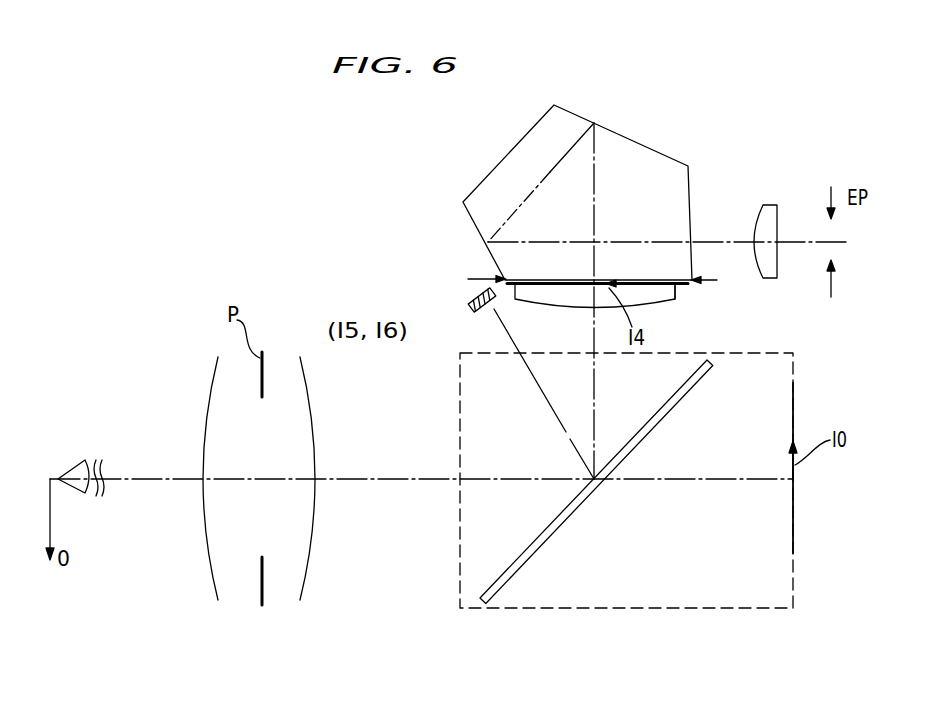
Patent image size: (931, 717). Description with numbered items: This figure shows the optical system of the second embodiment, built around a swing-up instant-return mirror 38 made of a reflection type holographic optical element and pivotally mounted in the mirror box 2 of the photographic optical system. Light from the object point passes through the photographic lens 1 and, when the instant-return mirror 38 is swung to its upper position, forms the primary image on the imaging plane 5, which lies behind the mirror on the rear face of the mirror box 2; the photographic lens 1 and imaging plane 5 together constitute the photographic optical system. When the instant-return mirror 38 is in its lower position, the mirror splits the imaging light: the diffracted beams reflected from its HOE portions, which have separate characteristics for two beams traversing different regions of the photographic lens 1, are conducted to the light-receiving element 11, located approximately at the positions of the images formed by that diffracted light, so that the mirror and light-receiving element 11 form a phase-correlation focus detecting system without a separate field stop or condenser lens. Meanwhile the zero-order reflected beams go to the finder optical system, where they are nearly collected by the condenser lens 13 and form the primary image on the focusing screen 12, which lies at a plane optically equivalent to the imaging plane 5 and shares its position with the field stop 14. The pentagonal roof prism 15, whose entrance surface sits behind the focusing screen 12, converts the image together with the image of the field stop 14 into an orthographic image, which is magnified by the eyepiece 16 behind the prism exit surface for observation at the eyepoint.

The photographic lens 1 is at (233, 593).
The mirror box 2 is at (457, 572).
The imaging plane 5 is at (795, 505).
The light-receiving element 11 is at (473, 292).
The focusing screen 12 is at (516, 291).
The condenser lens 13 is at (667, 300).
The field stop 14 is at (477, 279).
The pentagonal roof prism 15 is at (688, 165).
The eyepiece 16 is at (772, 204).
The instant-return mirror 38 is at (498, 604).